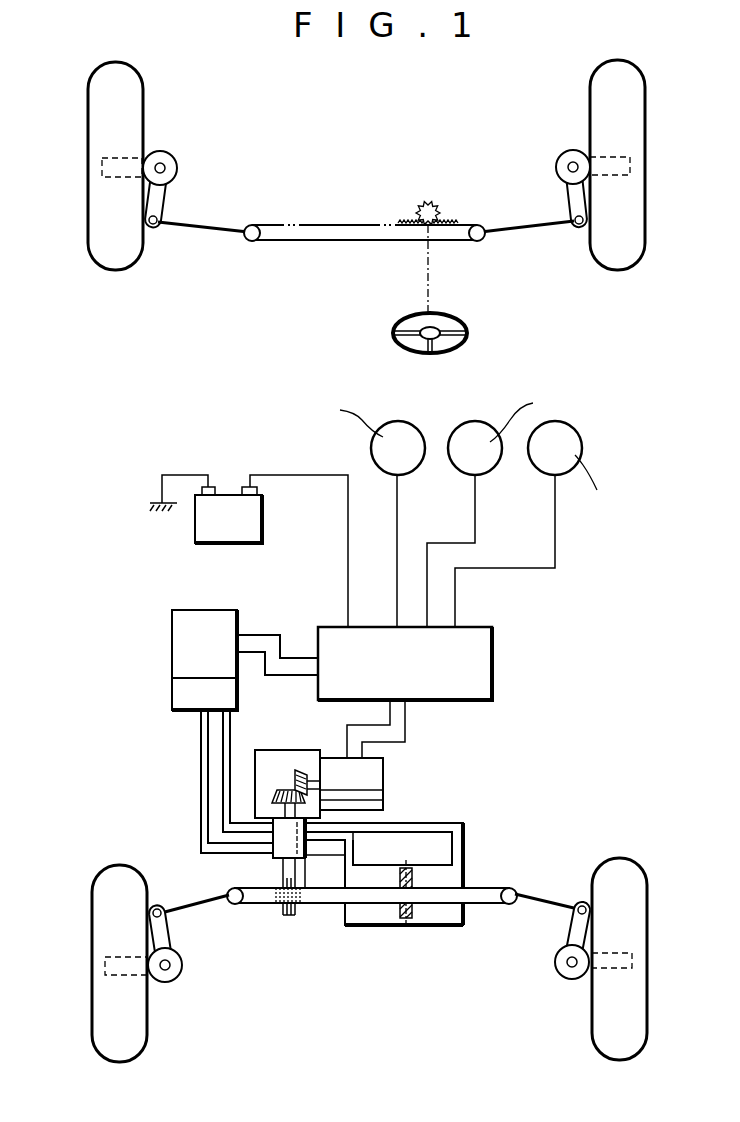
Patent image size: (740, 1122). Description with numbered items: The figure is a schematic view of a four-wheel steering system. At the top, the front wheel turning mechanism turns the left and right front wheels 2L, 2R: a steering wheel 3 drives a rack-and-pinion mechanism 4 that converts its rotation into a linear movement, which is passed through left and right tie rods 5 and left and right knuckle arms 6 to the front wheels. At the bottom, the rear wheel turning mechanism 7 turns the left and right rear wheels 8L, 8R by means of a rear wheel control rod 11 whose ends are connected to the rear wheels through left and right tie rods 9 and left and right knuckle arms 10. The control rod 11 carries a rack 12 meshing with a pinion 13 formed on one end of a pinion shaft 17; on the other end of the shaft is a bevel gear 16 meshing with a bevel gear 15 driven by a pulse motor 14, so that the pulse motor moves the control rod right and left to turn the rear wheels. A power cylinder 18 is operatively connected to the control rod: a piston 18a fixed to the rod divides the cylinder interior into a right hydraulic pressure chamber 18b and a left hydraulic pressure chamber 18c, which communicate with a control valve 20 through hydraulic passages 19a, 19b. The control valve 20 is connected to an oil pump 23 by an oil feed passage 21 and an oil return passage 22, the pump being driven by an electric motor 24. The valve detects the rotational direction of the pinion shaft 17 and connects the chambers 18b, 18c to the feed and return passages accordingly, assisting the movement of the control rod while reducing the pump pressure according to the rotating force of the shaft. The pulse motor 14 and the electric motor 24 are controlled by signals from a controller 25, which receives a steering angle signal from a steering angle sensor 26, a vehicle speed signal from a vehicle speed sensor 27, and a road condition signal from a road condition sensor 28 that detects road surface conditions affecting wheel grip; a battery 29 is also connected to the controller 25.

The left front wheel 2L is at (143, 88).
The right front wheel 2R is at (590, 85).
The steering wheel 3 is at (465, 327).
The rack-and-pinion mechanism 4 is at (445, 207).
The tie rods 5 is at (203, 235).
The knuckle arms 6 is at (163, 200).
The rear wheel turning mechanism 7 is at (512, 773).
The left rear wheel 8L is at (92, 912).
The right rear wheel 8R is at (648, 905).
The tie rods 9 is at (188, 900).
The knuckle arms 10 is at (168, 937).
The rear wheel control rod 11 is at (317, 903).
The rack 12 is at (270, 903).
The pinion 13 is at (292, 913).
The pulse motor 14 is at (375, 772).
The bevel gear 15 is at (287, 764).
The bevel gear 16 is at (276, 800).
The pinion shaft 17 is at (273, 866).
The power cylinder 18 is at (418, 923).
The piston 18a is at (413, 910).
The right hydraulic pressure chamber 18b is at (457, 915).
The left hydraulic pressure chamber 18c is at (362, 915).
The hydraulic passage 19a is at (430, 822).
The hydraulic passage 19b is at (357, 842).
The control valve 20 is at (327, 855).
The oil feed passage 21 is at (202, 780).
The oil return passage 22 is at (228, 743).
The oil pump 23 is at (182, 692).
The electric motor 24 is at (182, 628).
The controller 25 is at (478, 623).
The steering angle sensor 26 is at (385, 437).
The vehicle speed sensor 27 is at (476, 437).
The road condition sensor 28 is at (583, 445).
The battery 29 is at (247, 547).